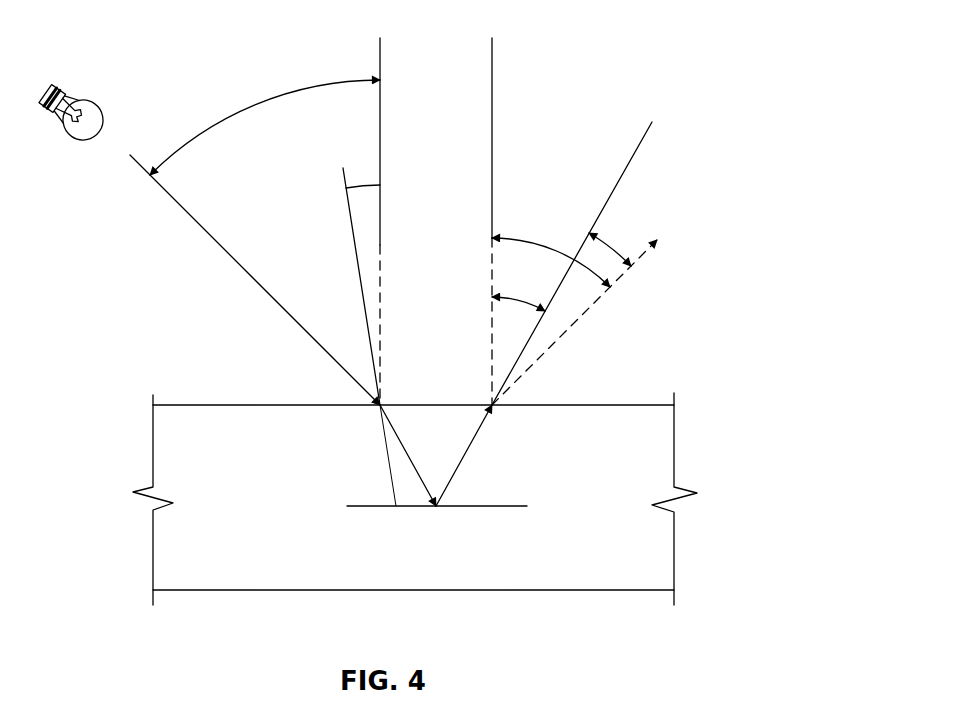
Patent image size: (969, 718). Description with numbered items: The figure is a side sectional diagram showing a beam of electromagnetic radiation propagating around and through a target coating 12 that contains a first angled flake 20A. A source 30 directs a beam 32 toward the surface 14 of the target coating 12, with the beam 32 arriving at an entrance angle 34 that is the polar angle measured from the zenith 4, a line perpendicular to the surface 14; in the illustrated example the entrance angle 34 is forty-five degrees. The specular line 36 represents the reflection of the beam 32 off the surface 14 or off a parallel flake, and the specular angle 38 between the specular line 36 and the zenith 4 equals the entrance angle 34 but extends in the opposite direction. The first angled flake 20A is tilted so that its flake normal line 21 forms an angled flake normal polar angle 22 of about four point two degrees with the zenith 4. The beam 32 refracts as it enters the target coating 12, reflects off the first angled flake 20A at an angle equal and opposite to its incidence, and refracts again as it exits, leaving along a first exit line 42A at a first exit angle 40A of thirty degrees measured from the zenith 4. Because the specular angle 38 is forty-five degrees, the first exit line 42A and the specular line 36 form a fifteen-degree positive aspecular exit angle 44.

The zenith 4 is at (380, 58).
The target coating 12 is at (217, 552).
The surface 14 is at (205, 403).
The first angled flake 20A is at (380, 508).
The flake normal line 21 is at (350, 215).
The angled flake normal polar angle 22 is at (360, 185).
The source 30 is at (58, 83).
The beam 32 is at (187, 211).
The entrance angle 34 is at (245, 107).
The specular line 36 is at (593, 303).
The specular angle 38 is at (530, 245).
The first exit angle 40A is at (510, 307).
The first exit line 42A is at (633, 150).
The positive aspecular exit angle 44 is at (615, 248).